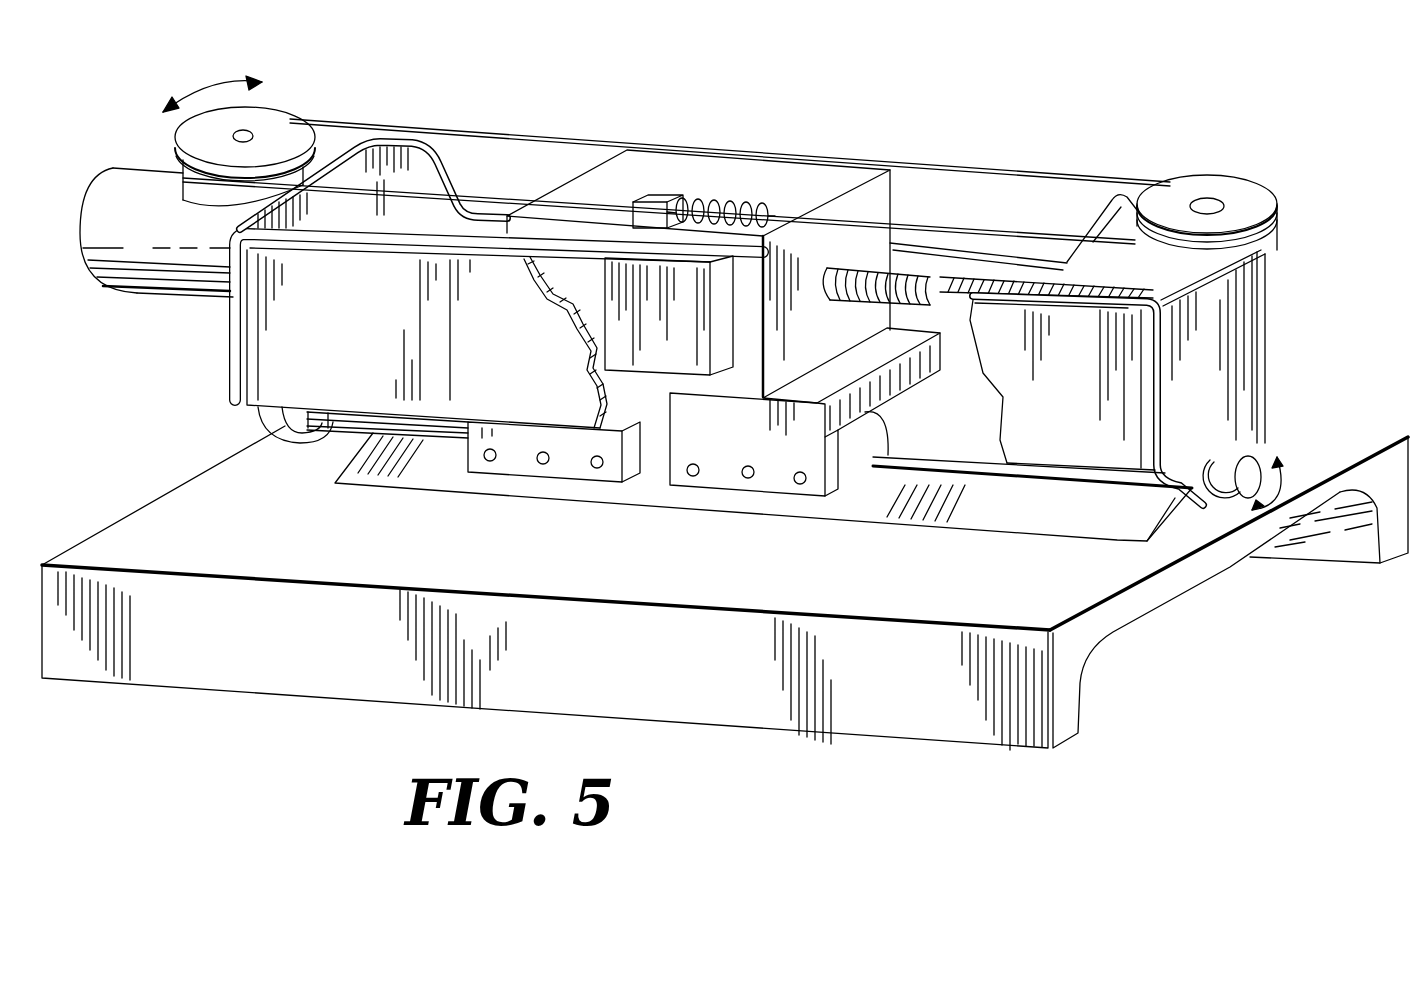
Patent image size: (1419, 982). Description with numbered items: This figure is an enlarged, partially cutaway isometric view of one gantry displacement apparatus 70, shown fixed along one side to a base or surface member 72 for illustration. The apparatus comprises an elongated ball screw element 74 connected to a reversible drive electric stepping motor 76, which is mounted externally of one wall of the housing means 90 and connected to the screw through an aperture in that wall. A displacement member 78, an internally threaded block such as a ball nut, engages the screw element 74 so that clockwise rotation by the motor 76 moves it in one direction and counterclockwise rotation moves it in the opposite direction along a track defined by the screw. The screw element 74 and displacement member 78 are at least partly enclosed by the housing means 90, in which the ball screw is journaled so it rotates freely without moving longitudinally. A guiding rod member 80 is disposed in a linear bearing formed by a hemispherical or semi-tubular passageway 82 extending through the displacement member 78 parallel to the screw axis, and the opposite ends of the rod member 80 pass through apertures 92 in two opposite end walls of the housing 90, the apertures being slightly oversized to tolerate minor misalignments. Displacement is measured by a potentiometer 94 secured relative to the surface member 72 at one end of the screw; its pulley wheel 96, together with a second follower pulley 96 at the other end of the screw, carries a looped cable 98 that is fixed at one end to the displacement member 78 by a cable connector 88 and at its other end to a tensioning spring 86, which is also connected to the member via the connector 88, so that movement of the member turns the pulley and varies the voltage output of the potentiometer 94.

The gantry displacement apparatus 70 is at (992, 126).
The base or surface member 72 is at (612, 716).
The ball screw element 74 is at (1070, 287).
The reversible drive electric stepping motor 76 is at (137, 172).
The displacement member 78 is at (717, 158).
The guiding rod member 80 is at (1250, 465).
The hemispherical or semi-tubular passageway 82 is at (875, 468).
The spring 86 is at (737, 203).
The cable connector 88 is at (660, 198).
The housing means 90 is at (233, 338).
The apertures 92 is at (1235, 450).
The potentiometer 94 is at (1212, 146).
The pulley wheel 96 is at (265, 127).
The cable 98 is at (1053, 170).